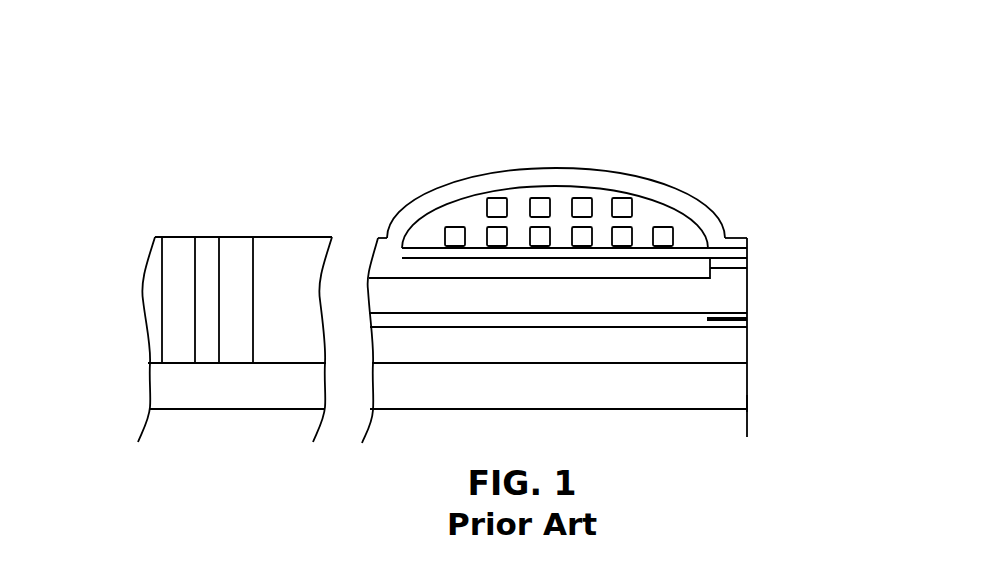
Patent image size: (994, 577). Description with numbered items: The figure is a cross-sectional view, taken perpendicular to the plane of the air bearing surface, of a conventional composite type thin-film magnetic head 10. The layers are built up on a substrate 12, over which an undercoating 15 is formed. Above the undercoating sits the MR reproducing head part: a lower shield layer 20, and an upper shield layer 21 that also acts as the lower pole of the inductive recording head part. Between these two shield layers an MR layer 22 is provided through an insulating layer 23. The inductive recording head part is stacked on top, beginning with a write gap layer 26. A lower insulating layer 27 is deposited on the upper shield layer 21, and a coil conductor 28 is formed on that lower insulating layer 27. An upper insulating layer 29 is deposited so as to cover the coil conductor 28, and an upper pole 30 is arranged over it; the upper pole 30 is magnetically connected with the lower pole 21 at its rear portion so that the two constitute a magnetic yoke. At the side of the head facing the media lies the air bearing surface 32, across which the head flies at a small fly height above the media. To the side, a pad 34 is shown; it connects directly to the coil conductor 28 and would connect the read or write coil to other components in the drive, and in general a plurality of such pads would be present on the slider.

The composite type thin-film magnetic head 10 is at (203, 267).
The substrate 12 is at (747, 422).
The undercoating 15 is at (747, 377).
The lower shield layer 20 is at (747, 343).
The upper shield layer 21 is at (747, 292).
The MR layer 22 is at (747, 323).
The insulating layer 23 is at (632, 318).
The write gap layer 26 is at (750, 248).
The lower insulating layer 27 is at (747, 265).
The coil conductor 28 is at (617, 202).
The upper insulating layer 29 is at (513, 200).
The upper pole 30 is at (740, 237).
The air bearing surface 32 is at (748, 403).
The pad 34 is at (160, 345).